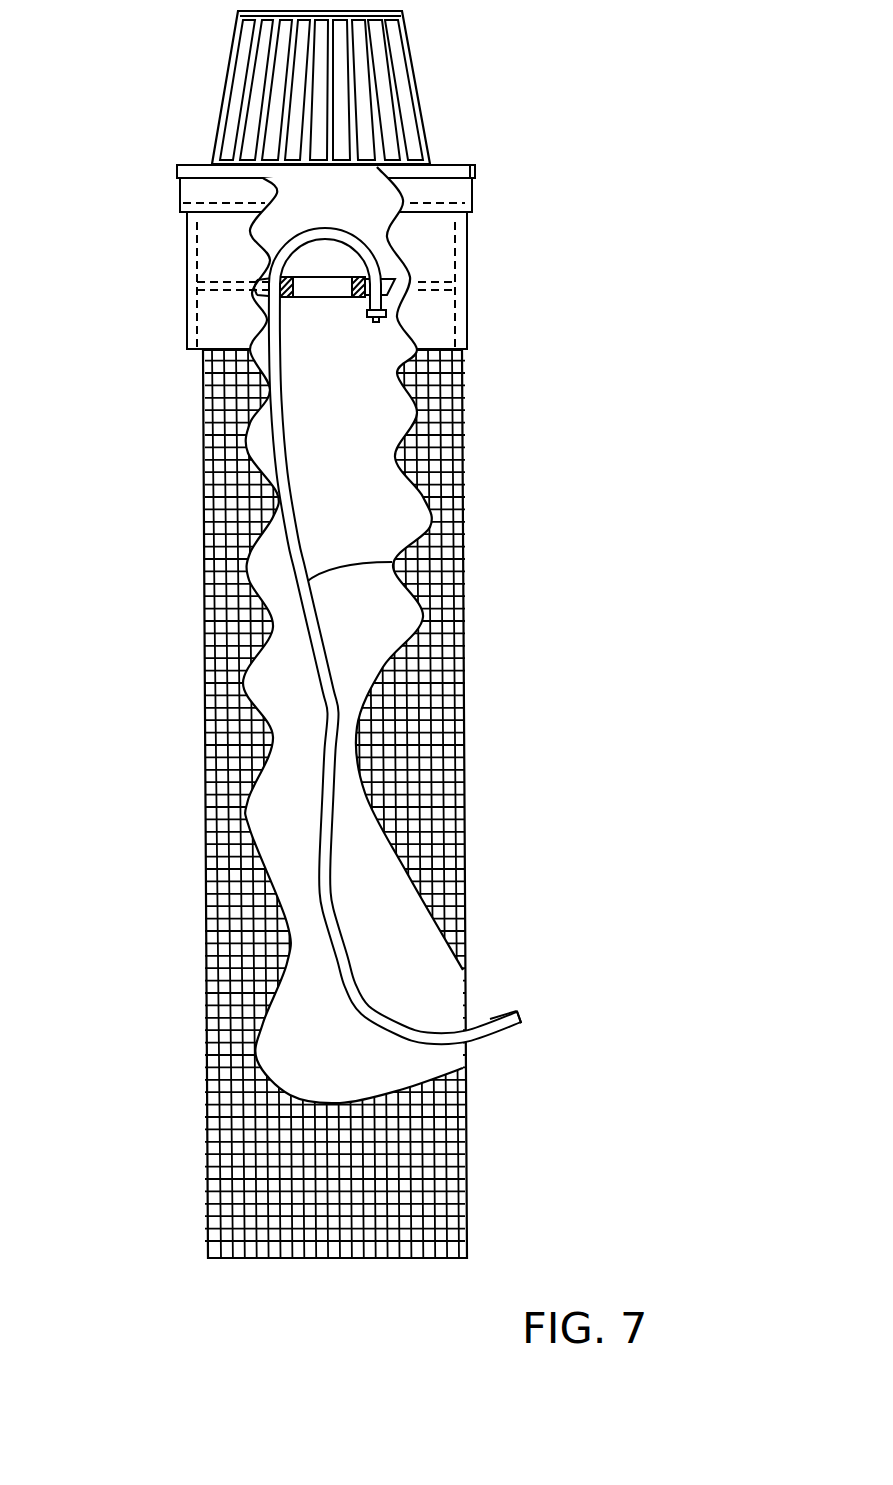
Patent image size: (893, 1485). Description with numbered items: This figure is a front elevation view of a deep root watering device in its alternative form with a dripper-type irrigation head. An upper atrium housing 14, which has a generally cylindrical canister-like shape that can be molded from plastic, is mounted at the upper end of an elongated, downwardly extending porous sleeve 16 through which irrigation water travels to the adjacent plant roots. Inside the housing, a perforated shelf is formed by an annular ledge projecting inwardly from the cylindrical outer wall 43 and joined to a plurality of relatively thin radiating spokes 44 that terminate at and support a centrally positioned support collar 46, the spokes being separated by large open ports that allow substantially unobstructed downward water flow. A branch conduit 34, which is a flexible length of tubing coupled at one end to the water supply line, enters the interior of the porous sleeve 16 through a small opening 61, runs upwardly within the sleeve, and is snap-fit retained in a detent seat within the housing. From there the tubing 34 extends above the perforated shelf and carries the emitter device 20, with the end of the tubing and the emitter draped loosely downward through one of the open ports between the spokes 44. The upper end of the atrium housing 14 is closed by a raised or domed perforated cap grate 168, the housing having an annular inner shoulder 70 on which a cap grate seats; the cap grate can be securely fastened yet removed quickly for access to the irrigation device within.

The atrium housing 14 is at (178, 326).
The porous sleeve 16 is at (205, 952).
The emitter device 20 is at (349, 322).
The branch conduit 34 is at (343, 224).
The cylindrical outer wall 43 is at (205, 252).
The spokes 44 is at (423, 270).
The support collar 46 is at (308, 297).
The small opening 61 is at (438, 1046).
The annular inner shoulder 70 is at (205, 200).
The domed perforated cap grate 168 is at (235, 83).